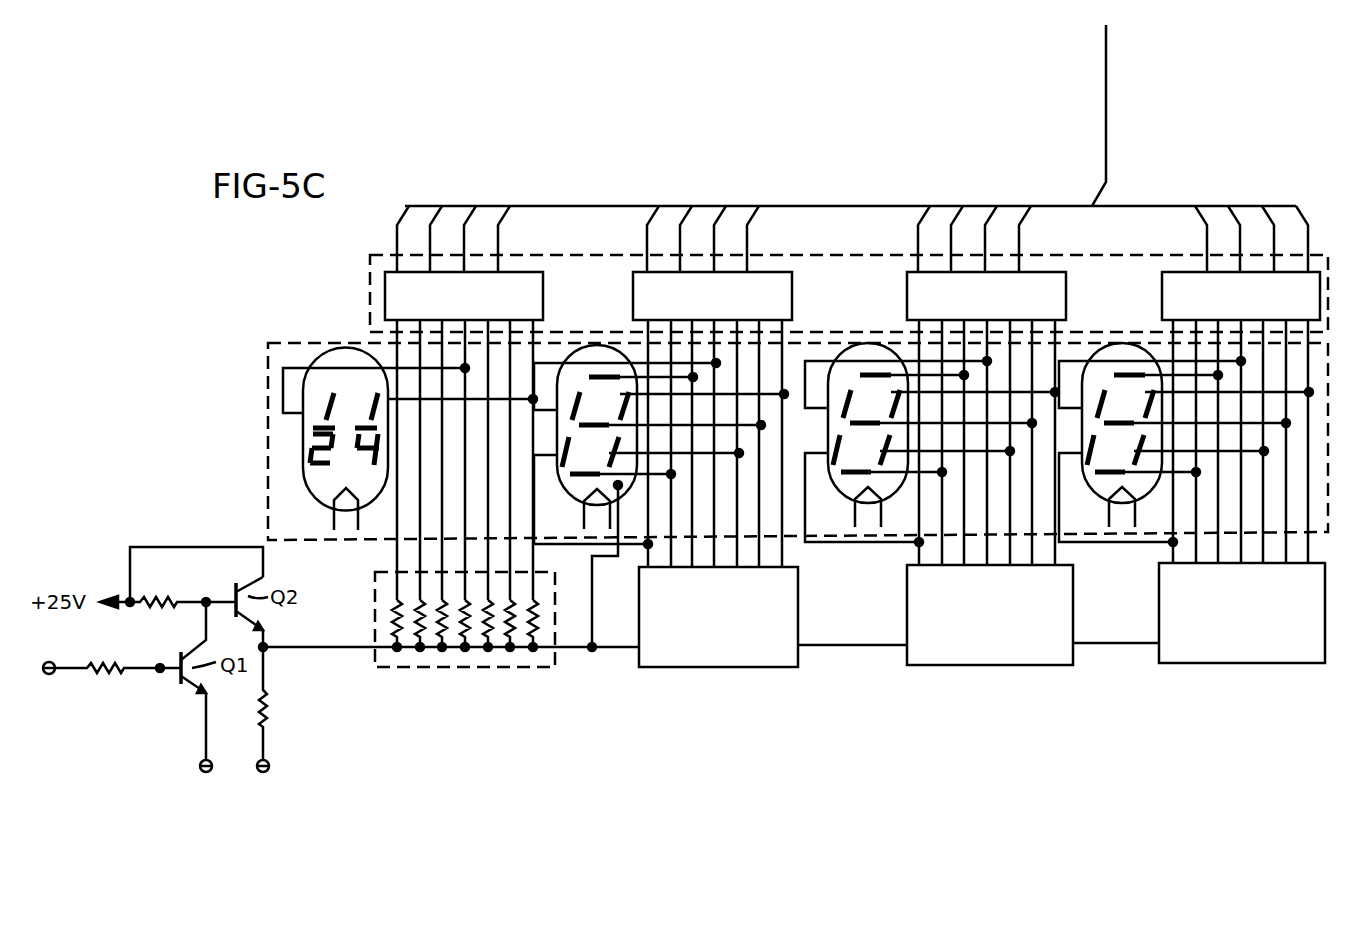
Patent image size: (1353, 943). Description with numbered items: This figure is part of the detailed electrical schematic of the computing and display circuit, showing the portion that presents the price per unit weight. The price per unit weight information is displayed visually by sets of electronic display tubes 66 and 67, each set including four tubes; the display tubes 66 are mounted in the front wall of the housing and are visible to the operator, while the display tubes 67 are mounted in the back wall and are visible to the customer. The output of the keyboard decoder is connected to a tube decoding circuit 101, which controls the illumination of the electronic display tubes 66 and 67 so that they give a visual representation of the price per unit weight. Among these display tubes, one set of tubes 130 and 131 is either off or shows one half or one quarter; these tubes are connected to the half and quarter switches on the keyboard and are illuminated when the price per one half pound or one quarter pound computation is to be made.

The tube decoding circuit 101 is at (368, 277).
The electronic display tubes 66 is at (268, 457).
The electronic display tubes 67 is at (767, 497).
The tube 130 is at (317, 487).
The tube 131 is at (300, 461).